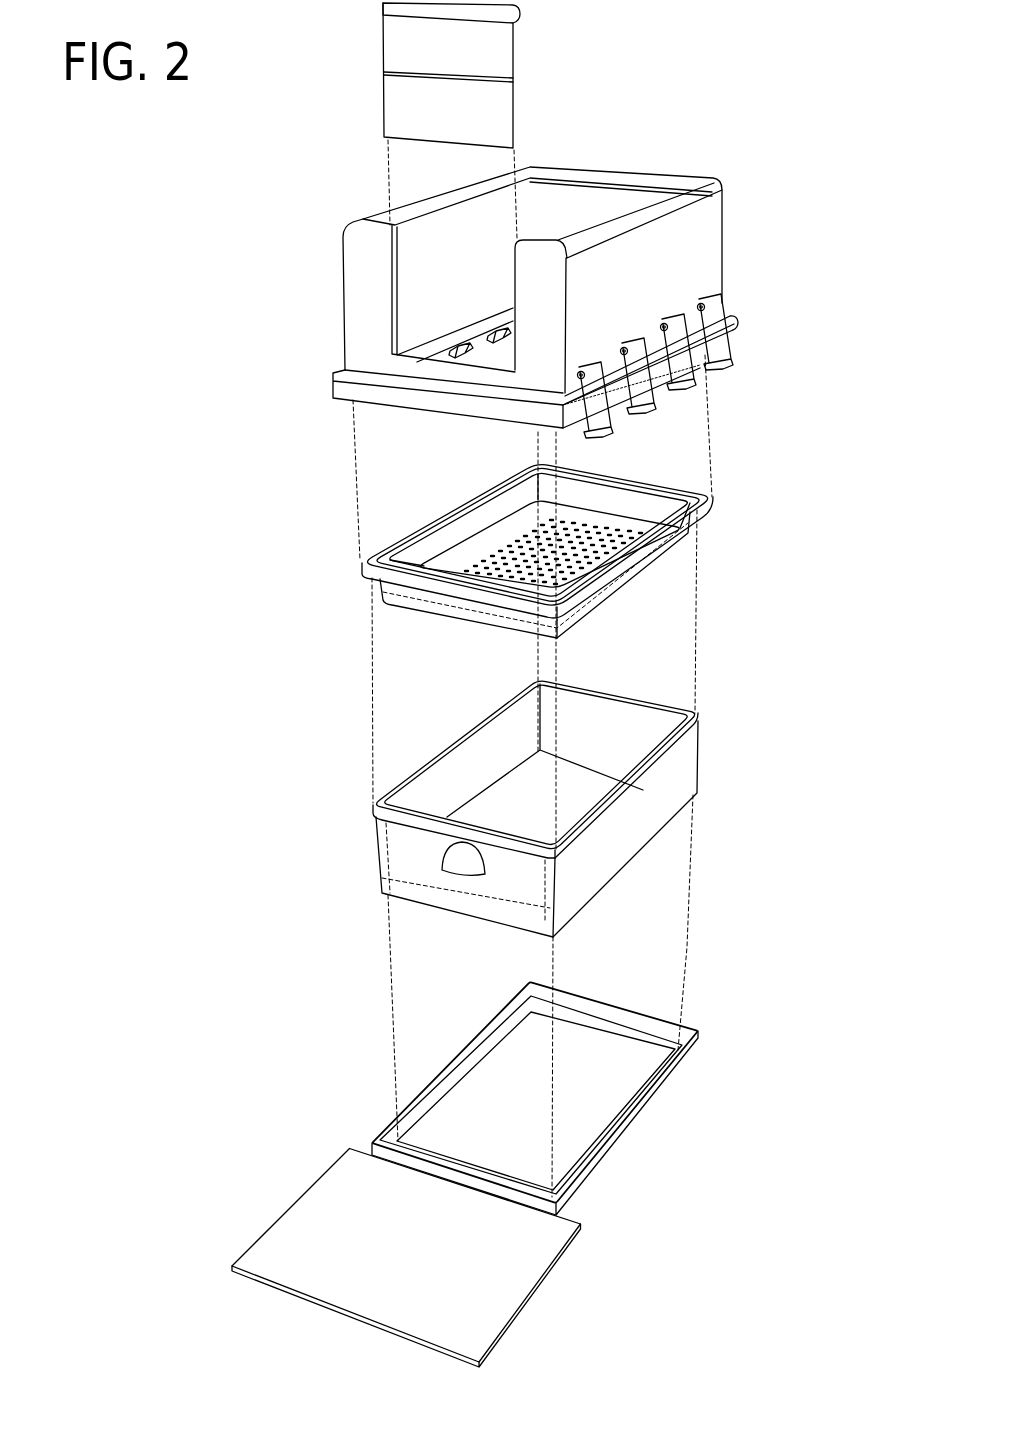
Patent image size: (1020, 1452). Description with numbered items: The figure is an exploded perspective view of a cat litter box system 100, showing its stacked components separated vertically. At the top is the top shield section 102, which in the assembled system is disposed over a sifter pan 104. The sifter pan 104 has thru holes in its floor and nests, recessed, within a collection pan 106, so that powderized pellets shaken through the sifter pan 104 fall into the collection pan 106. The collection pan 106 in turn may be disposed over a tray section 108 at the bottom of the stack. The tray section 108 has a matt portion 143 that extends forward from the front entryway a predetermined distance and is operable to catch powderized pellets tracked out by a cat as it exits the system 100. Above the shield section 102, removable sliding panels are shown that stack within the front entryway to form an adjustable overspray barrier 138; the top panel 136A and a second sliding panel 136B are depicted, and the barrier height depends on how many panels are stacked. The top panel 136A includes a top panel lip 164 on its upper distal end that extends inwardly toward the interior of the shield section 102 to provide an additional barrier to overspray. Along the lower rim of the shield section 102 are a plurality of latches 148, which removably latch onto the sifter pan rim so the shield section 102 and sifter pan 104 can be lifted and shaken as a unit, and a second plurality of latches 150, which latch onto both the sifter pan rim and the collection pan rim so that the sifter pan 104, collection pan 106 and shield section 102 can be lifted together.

The cat litter box system 100 is at (706, 110).
The top shield section 102 is at (707, 255).
The sifter pan 104 is at (697, 508).
The collection pan 106 is at (670, 775).
The tray section 108 is at (670, 1083).
The top panel 136A is at (477, 63).
The sliding panel 136B is at (477, 128).
The overspray barrier 138 is at (372, 0).
The matt portion 143 is at (311, 1232).
The latches 148 is at (645, 403).
The second plurality of latches 150 is at (603, 425).
The top panel lip 164 is at (521, 13).